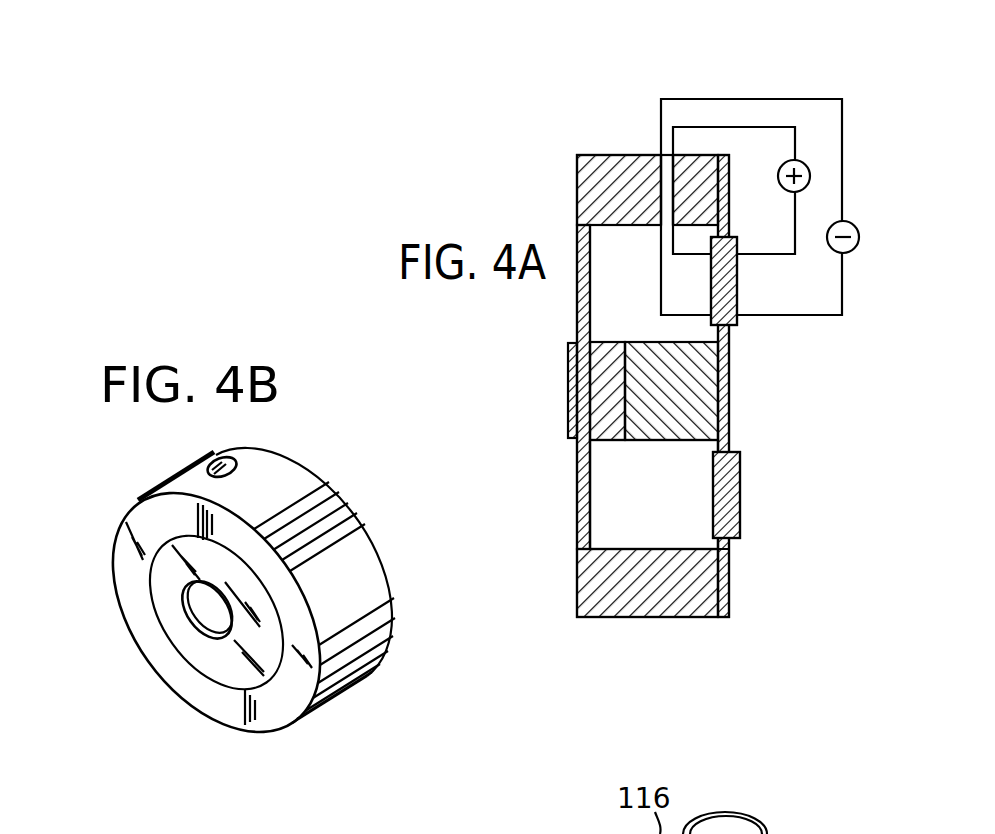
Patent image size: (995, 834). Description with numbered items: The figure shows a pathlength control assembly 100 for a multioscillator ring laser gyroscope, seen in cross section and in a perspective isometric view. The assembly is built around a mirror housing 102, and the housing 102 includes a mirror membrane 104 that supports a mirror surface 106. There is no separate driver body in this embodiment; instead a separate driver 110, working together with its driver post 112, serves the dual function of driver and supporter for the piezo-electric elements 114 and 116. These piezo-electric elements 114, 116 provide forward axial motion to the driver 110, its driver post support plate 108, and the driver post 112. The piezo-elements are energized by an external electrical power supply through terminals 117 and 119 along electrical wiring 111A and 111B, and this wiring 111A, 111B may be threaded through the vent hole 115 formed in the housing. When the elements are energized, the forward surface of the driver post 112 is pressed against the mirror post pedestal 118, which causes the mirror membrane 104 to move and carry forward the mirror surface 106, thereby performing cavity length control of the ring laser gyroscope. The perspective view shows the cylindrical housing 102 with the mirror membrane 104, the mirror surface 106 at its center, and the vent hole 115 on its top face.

In FIG. 4A, the pathlength control assembly 100 is at (566, 122).
In FIG. 4B, the pathlength control assembly 100 is at (120, 487).
In FIG. 4A, the mirror housing 102 is at (648, 597).
In FIG. 4B, the mirror housing 102 is at (345, 680).
In FIG. 4B, the mirror membrane 104 is at (232, 667).
In FIG. 4A, the mirror surface 106 is at (573, 392).
In FIG. 4B, the mirror surface 106 is at (205, 608).
In FIG. 4A, the driver post support plate 108 is at (730, 580).
In FIG. 4B, the driver post support plate 108 is at (381, 572).
In FIG. 4A, the driver 110 is at (729, 347).
In FIG. 4A, the electrical wiring 111A is at (748, 127).
In FIG. 4A, the electrical wiring 111B is at (705, 99).
In FIG. 4A, the driver post 112 is at (716, 384).
In FIG. 4A, the piezo-electric element 114 is at (713, 497).
In FIG. 4A, the vent hole 115 is at (656, 155).
In FIG. 4B, the vent hole 115 is at (222, 458).
In FIG. 4A, the piezo-electric element 116 is at (741, 487).
In FIG. 4A, the terminal 117 is at (778, 177).
In FIG. 4A, the mirror post pedestal 118 is at (606, 350).
In FIG. 4A, the terminal 119 is at (836, 252).